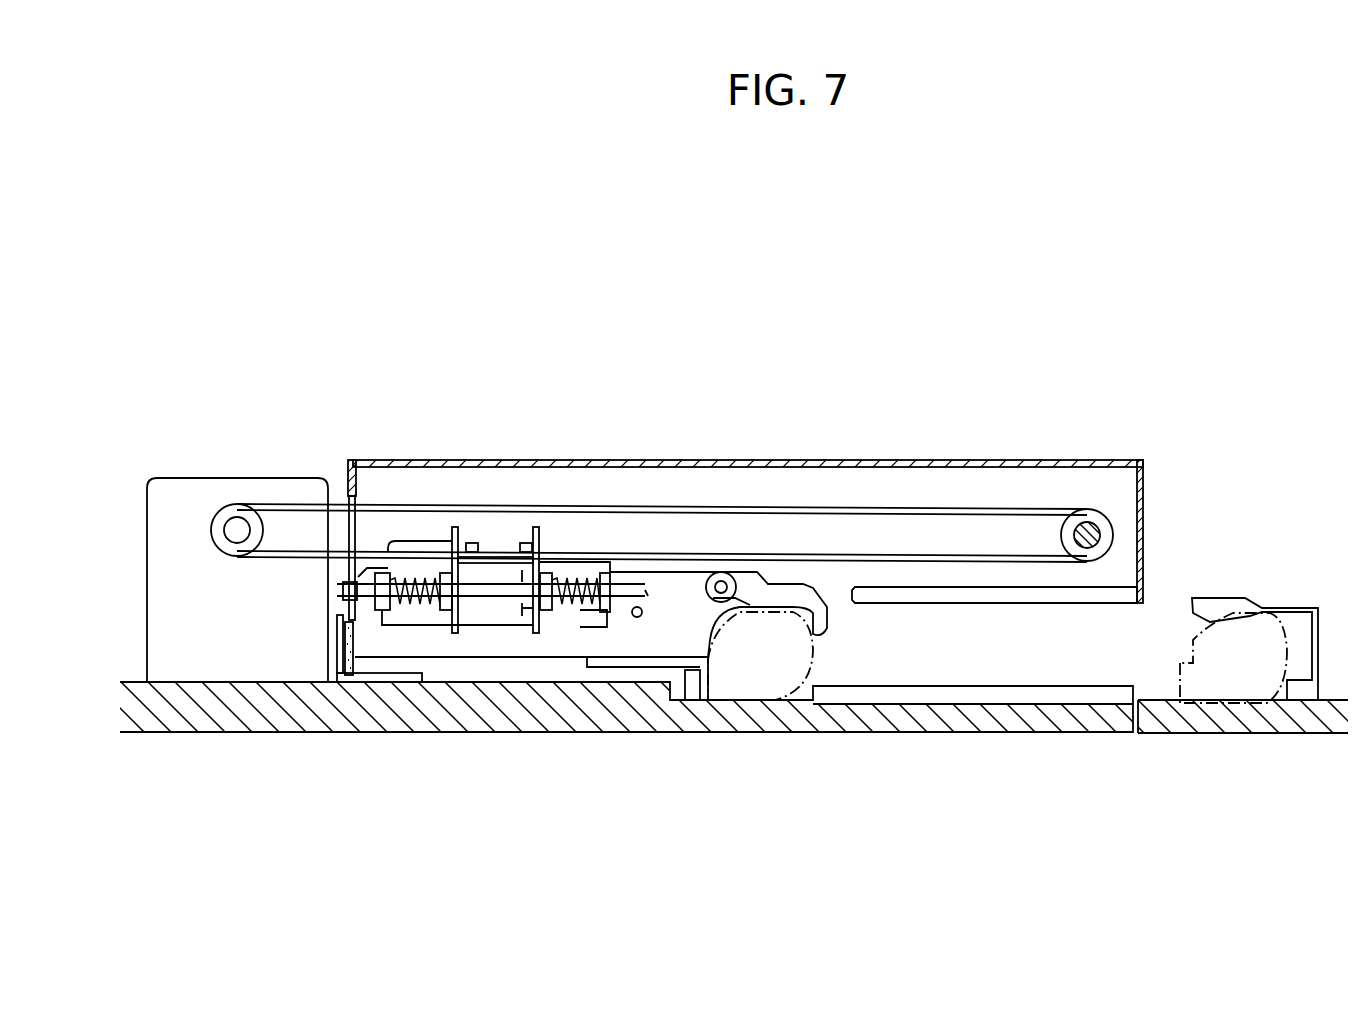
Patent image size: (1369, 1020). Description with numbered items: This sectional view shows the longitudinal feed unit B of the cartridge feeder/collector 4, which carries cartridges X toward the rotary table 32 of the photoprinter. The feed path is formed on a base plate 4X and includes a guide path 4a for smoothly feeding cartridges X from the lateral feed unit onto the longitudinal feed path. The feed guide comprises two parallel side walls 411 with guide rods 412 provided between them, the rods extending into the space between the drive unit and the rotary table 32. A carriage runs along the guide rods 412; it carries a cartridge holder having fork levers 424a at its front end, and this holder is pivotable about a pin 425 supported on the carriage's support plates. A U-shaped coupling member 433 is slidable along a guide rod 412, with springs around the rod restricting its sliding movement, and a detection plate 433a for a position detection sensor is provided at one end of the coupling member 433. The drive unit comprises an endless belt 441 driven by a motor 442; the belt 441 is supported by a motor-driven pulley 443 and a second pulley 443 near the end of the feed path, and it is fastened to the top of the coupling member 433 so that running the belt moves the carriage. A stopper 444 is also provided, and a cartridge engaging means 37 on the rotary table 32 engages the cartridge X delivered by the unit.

The cartridge feeder/collector 4 is at (1000, 430).
The longitudinal feed unit B is at (257, 377).
The cartridge X is at (768, 660).
The rotary table 32 is at (1207, 727).
The cartridge engaging means 37 is at (1305, 608).
The side wall 411 is at (812, 465).
The guide rod 412 is at (1103, 598).
The fork lever 424a is at (790, 590).
The pin 425 is at (716, 573).
The coupling member 433 is at (548, 560).
The detection plate 433a is at (494, 560).
The endless belt 441 is at (920, 557).
The motor 442 is at (173, 498).
The pulley 443 is at (235, 516).
The stopper 444 is at (345, 684).
The base plate 4X is at (492, 703).
The guide path 4a is at (937, 682).